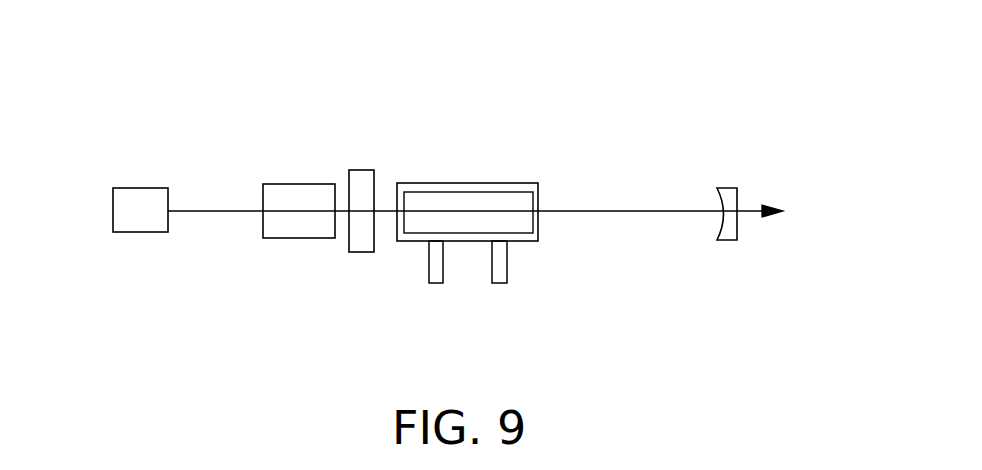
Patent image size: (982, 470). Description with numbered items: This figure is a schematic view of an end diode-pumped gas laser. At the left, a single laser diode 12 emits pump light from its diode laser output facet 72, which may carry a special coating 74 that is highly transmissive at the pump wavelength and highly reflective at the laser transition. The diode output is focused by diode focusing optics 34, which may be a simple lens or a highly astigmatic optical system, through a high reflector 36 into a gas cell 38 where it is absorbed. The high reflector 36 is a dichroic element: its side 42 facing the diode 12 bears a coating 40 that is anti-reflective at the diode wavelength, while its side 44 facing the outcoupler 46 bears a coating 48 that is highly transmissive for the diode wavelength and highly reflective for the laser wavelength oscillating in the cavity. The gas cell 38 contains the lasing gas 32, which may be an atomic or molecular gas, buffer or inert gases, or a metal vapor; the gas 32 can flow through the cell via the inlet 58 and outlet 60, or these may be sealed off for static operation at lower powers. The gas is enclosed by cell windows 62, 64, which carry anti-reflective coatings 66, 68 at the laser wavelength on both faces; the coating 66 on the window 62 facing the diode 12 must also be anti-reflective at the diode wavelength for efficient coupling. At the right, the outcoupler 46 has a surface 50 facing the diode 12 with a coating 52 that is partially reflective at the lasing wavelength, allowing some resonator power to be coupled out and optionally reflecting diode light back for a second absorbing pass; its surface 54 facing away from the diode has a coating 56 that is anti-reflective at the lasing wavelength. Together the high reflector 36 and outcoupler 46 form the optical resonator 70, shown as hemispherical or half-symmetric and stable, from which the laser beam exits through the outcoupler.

The laser diode 12 is at (113, 210).
The diode laser output facet 72 is at (168, 196).
The special coating 74 is at (168, 226).
The diode focusing optics 34 is at (268, 184).
The high reflector 36 is at (349, 178).
The coating 66 is at (374, 182).
The cell window 62 is at (397, 194).
The coating 40 is at (349, 236).
The side 42 is at (351, 252).
The coating 48 is at (373, 252).
The side 44 is at (375, 236).
The lasing gas 32 is at (526, 219).
The gas cell 38 is at (469, 183).
The cell window 64 is at (538, 184).
The coating 68 is at (540, 199).
The inlet 58 is at (436, 283).
The outlet 60 is at (500, 283).
The outcoupler 46 is at (733, 240).
The surface 50 is at (718, 197).
The coating 52 is at (718, 230).
The surface 54 is at (739, 201).
The coating 56 is at (739, 227).
The optical resonator 70 is at (514, 87).